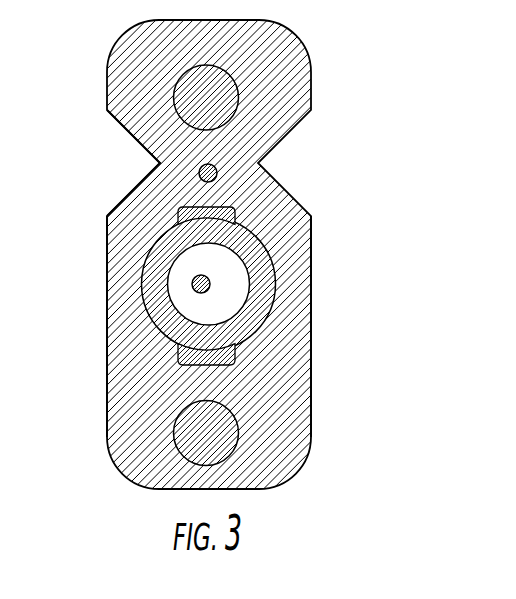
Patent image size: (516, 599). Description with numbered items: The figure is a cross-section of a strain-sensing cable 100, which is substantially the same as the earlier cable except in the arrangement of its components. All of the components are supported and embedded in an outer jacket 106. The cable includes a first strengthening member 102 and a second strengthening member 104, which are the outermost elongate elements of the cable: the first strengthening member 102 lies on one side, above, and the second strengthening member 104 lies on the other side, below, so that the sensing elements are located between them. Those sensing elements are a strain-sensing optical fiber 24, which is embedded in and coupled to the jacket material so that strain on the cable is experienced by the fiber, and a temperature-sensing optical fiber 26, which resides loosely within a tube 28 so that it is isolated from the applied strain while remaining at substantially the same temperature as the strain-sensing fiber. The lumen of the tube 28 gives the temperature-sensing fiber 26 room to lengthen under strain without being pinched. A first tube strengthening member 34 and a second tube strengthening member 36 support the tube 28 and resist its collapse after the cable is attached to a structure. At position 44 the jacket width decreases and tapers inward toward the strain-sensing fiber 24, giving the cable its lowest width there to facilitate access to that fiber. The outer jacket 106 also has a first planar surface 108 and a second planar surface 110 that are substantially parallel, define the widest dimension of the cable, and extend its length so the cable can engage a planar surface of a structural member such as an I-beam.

The strain-sensing cable 100 is at (250, 299).
The first strengthening member 102 is at (218, 90).
The second strengthening member 104 is at (230, 428).
The outer jacket 106 is at (294, 261).
The first planar surface 108 is at (107, 380).
The second planar surface 110 is at (312, 353).
The position 44 is at (150, 163).
The strain-sensing optical fiber 24 is at (218, 170).
The temperature-sensing optical fiber 26 is at (193, 283).
The tube 28 is at (162, 247).
The first tube strengthening member 34 is at (233, 208).
The second tube strengthening member 36 is at (230, 357).